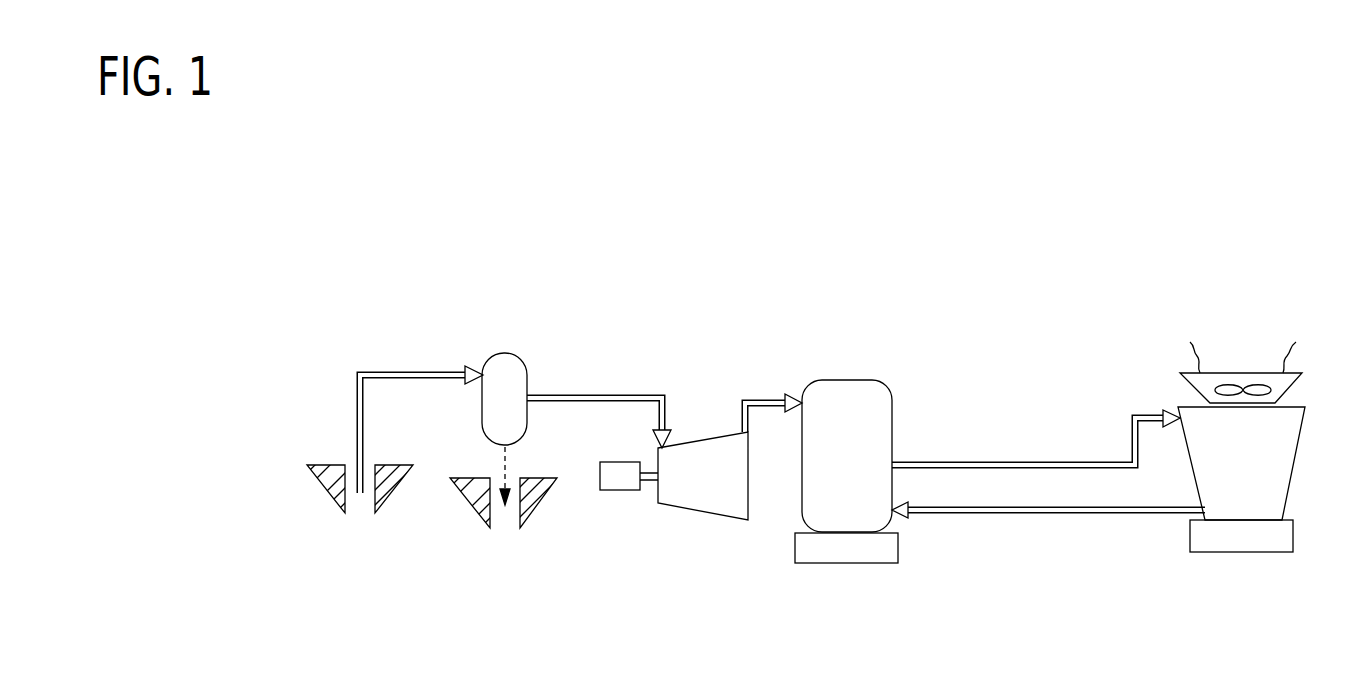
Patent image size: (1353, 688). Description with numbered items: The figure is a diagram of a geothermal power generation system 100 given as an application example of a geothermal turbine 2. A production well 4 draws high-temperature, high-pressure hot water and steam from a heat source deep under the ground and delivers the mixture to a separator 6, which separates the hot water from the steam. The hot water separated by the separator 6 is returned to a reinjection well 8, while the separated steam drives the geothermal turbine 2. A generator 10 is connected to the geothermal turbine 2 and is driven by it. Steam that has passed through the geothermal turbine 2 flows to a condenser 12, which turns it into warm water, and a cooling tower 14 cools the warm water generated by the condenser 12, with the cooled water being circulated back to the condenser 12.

The geothermal power generation system 100 is at (1090, 216).
The geothermal turbine 2 is at (706, 441).
The production well 4 is at (360, 505).
The separator 6 is at (482, 410).
The reinjection well 8 is at (505, 528).
The generator 10 is at (622, 491).
The condenser 12 is at (801, 508).
The cooling tower 14 is at (1192, 462).